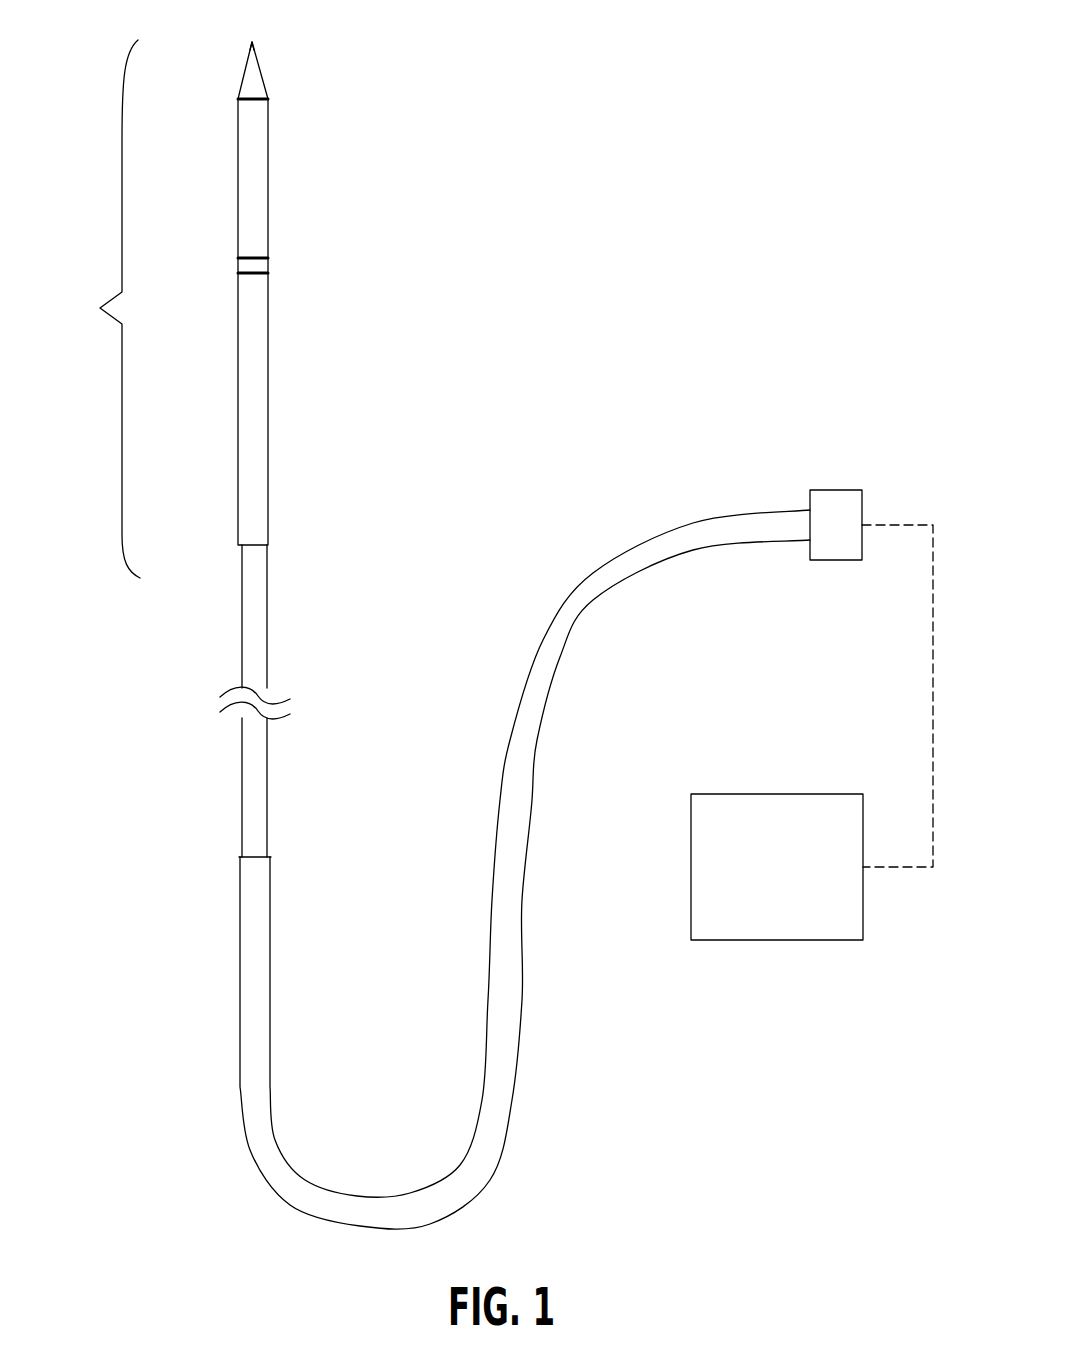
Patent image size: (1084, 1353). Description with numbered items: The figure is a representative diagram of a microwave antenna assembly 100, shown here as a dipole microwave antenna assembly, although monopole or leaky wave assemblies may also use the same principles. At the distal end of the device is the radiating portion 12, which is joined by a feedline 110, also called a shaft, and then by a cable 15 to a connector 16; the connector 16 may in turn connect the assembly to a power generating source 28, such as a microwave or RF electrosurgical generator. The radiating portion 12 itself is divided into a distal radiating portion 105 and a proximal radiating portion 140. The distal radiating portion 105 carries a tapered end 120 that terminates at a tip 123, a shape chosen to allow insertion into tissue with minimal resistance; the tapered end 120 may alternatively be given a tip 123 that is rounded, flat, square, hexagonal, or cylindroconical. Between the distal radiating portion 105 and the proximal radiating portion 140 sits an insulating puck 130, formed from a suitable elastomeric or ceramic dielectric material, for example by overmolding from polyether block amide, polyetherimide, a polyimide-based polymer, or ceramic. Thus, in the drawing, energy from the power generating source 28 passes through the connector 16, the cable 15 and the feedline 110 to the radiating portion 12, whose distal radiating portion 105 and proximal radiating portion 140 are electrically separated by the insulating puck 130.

The microwave antenna assembly 100 is at (699, 54).
The radiating portion 12 is at (101, 309).
The tapered end 120 is at (244, 73).
The tip 123 is at (252, 42).
The distal radiating portion 105 is at (302, 175).
The insulating puck 130 is at (270, 266).
The proximal radiating portion 140 is at (302, 400).
The feedline 110 is at (267, 633).
The cable 15 is at (238, 918).
The connector 16 is at (838, 490).
The power generating source 28 is at (778, 794).